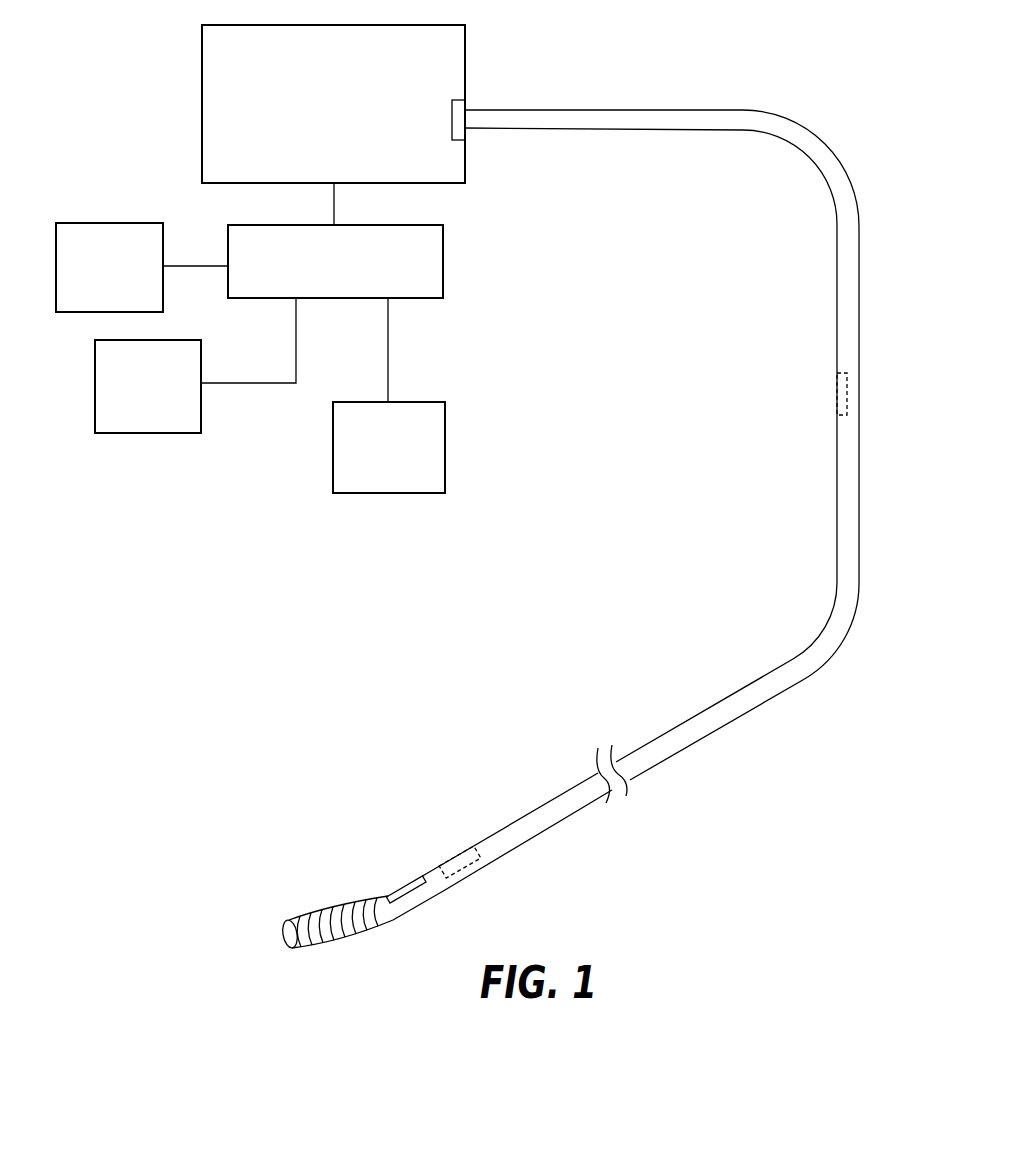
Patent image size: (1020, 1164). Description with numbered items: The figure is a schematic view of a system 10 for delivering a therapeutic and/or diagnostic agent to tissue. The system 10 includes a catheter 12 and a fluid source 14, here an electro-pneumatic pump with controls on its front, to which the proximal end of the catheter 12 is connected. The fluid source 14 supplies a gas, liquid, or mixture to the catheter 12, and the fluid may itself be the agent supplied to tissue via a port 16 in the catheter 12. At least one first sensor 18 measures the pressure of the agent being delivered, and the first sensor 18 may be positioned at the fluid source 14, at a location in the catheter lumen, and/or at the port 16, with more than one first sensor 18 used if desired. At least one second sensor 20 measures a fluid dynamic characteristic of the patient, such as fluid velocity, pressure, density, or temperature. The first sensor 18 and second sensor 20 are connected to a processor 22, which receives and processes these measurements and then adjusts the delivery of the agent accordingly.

The system 10 is at (757, 92).
The catheter 12 is at (797, 666).
The fluid source 14 is at (466, 63).
The port 16 is at (400, 888).
The first sensor 18 is at (460, 121).
The second sensor 20 is at (100, 222).
The processor 22 is at (442, 252).